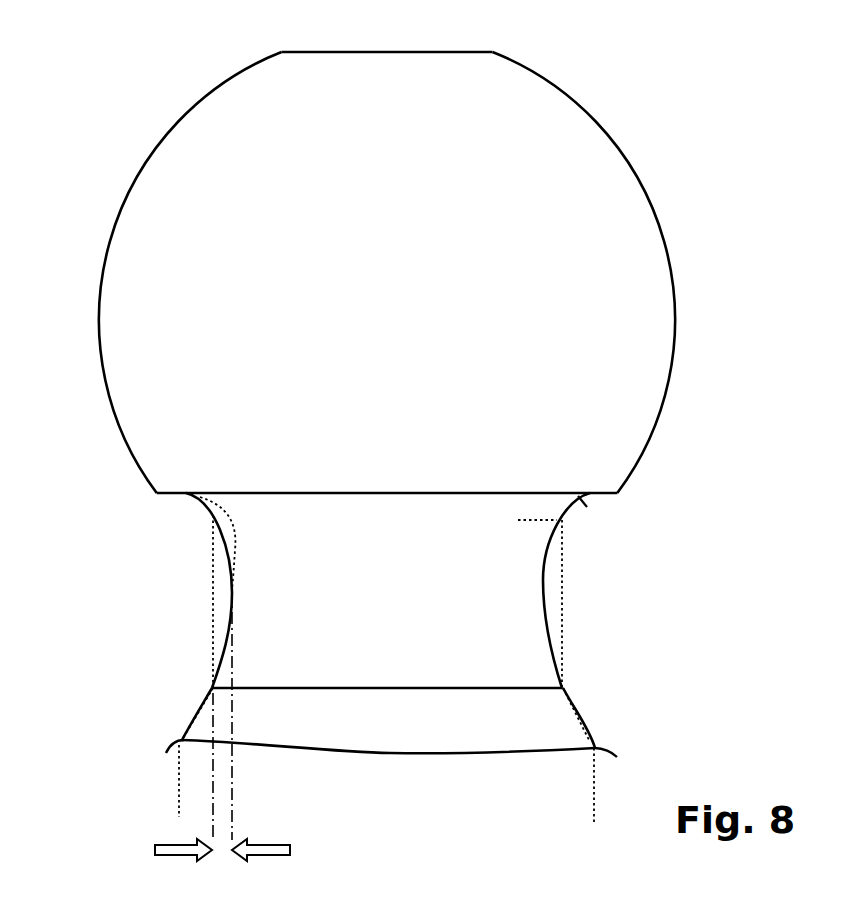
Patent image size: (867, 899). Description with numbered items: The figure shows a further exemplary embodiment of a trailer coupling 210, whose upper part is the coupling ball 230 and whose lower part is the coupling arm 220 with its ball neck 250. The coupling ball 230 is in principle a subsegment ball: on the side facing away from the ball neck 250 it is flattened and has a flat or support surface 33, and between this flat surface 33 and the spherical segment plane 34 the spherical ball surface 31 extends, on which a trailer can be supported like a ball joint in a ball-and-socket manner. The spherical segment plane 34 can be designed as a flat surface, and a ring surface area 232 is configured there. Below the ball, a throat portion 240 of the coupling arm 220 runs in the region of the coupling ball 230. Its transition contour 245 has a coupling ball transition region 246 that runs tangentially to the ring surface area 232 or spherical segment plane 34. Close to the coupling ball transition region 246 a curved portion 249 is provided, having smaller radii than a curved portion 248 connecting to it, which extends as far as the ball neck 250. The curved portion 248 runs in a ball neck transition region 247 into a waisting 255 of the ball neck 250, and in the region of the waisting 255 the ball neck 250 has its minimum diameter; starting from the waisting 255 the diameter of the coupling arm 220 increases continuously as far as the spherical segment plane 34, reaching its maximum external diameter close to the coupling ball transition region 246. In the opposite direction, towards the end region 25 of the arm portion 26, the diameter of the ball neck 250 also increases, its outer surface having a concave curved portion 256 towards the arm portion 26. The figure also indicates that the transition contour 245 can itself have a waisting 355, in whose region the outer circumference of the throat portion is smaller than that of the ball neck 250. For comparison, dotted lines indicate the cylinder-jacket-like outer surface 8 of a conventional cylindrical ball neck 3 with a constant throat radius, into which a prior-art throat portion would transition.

The trailer coupling 210 is at (700, 151).
The coupling ball 230 is at (219, 66).
The flat surface 33 is at (353, 52).
The spherical ball surface 31 is at (676, 290).
The spherical segment plane 34 is at (408, 493).
The throat portion 240 is at (180, 507).
The ball neck transition region 247 is at (232, 588).
The waisting 355 is at (235, 533).
The transition contour 245 is at (232, 595).
The outer surface 8 is at (212, 566).
The ball neck 250 is at (583, 682).
The curved portion 248 is at (553, 550).
The ring surface area 232 is at (595, 502).
The coupling ball transition region 246 is at (590, 507).
The curved portion 249 is at (587, 508).
The waisting 255 is at (545, 603).
The concave curved portion 256 is at (562, 670).
The coupling arm 220 is at (168, 724).
The ball neck 3 is at (582, 732).
The end region 25 is at (595, 745).
The arm portion 26 is at (176, 752).